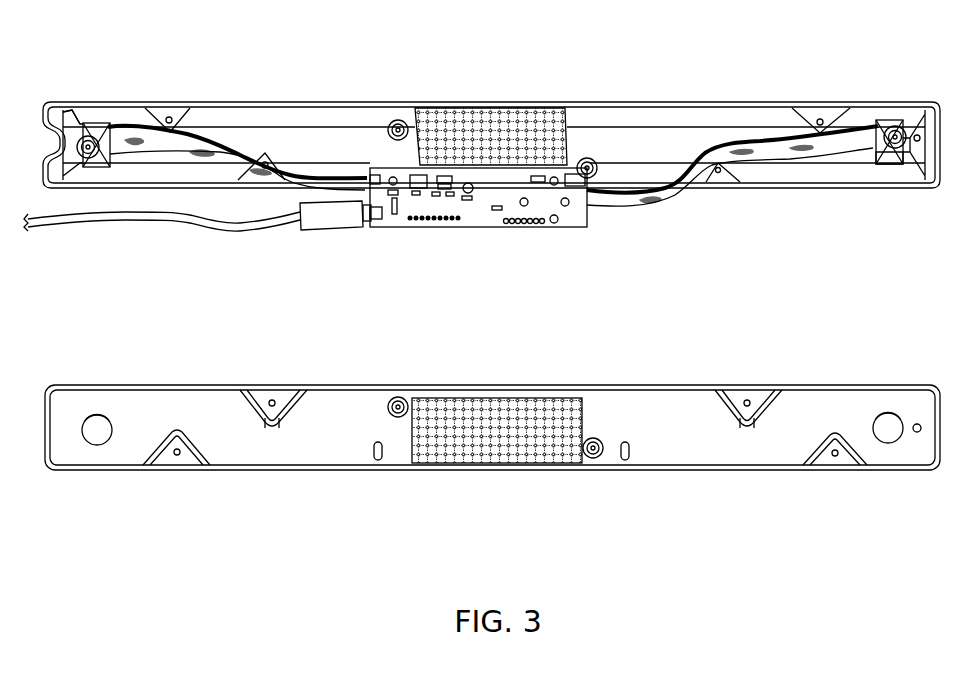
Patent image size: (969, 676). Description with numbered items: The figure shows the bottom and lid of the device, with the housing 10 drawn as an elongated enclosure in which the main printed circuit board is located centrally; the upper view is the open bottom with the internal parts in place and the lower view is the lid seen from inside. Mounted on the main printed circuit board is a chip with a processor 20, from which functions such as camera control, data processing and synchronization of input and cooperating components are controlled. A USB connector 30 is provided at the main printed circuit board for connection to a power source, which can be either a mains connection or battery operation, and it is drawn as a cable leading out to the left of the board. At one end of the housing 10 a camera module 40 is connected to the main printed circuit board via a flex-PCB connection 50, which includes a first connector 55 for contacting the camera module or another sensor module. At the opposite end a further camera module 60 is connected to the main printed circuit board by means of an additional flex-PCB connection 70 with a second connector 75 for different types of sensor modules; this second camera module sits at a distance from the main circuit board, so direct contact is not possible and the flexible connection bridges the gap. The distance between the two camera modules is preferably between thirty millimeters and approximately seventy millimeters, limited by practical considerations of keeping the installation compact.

The housing 10 is at (315, 118).
The processor 20 is at (482, 210).
The USB connector 30 is at (122, 222).
The camera module 40 is at (95, 120).
The flex-PCB connection 50 is at (210, 147).
The first connector 55 is at (65, 112).
The further camera module 60 is at (895, 120).
The additional flex-PCB connection 70 is at (767, 148).
The second connector 75 is at (887, 162).